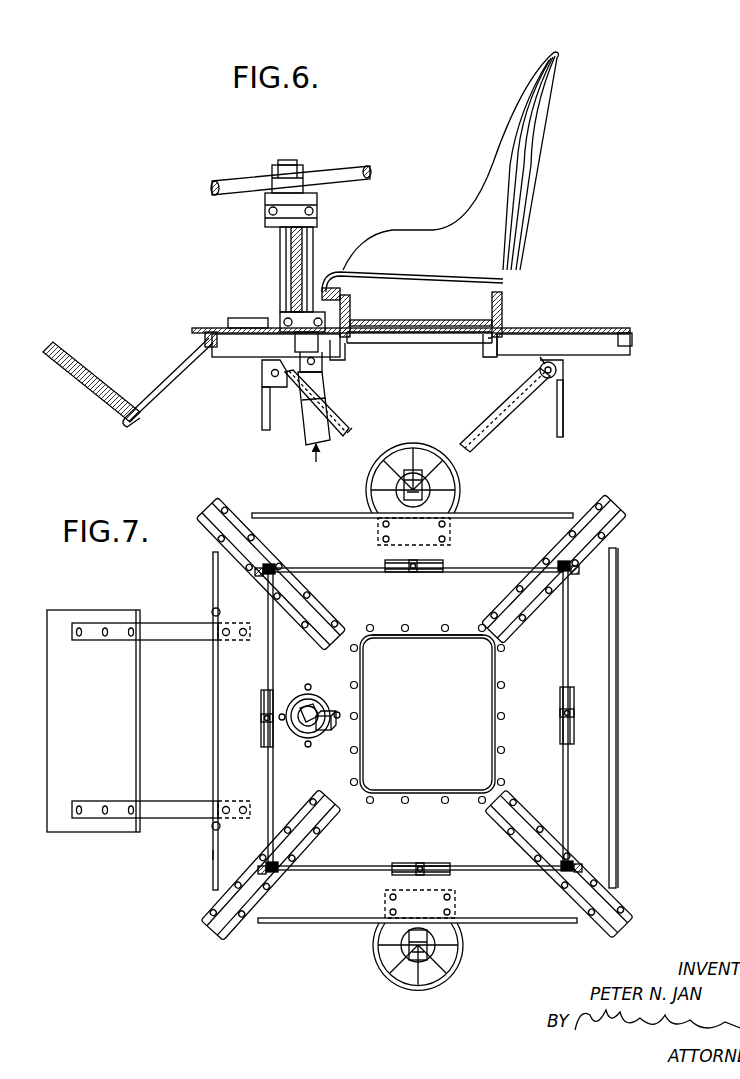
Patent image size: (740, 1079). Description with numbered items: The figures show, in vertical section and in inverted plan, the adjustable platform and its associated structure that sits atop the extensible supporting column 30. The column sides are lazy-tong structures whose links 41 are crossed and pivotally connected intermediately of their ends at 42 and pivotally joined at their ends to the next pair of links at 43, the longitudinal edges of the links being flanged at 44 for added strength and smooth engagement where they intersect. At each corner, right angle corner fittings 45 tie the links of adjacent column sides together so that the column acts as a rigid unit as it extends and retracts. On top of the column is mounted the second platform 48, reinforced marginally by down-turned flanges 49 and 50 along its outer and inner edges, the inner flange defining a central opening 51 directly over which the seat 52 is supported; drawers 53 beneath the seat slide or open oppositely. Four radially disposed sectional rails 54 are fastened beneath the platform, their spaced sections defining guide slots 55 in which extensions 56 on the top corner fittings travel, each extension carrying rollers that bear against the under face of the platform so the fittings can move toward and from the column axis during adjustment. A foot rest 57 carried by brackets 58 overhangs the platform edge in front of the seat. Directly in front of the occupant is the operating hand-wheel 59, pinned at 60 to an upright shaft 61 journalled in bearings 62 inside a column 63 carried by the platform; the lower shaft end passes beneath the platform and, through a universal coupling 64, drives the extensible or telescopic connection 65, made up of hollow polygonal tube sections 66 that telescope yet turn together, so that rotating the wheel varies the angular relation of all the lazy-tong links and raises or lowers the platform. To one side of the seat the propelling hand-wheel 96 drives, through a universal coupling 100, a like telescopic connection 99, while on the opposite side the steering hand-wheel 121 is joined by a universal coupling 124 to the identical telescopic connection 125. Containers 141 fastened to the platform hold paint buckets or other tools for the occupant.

In FIG. 6, the supporting column 30 is at (566, 416).
In FIG. 7, the supporting column 30 is at (569, 636).
In FIG. 6, the links 41 is at (270, 429).
In FIG. 7, the links 41 is at (397, 573).
In FIG. 7, the pivotal connection 42 is at (413, 573).
In FIG. 6, the pivotal connection 43 is at (263, 412).
In FIG. 7, the pivotal connection 43 is at (266, 863).
In FIG. 6, the flanges 44 is at (349, 432).
In FIG. 7, the flanges 44 is at (575, 784).
In FIG. 6, the right angle corner fittings 45 is at (263, 367).
In FIG. 7, the right angle corner fittings 45 is at (567, 567).
In FIG. 6, the second platform 48 is at (574, 328).
In FIG. 7, the second platform 48 is at (606, 745).
In FIG. 6, the down-turned flange 49 is at (629, 342).
In FIG. 7, the down-turned flange 49 is at (619, 681).
In FIG. 6, the down-turned flange 50 is at (357, 344).
In FIG. 7, the down-turned flange 50 is at (423, 640).
In FIG. 6, the central opening 51 is at (422, 340).
In FIG. 7, the central opening 51 is at (428, 714).
In FIG. 6, the seat 52 is at (538, 186).
In FIG. 6, the drawers 53 is at (504, 306).
In FIG. 6, the rails 54 is at (226, 352).
In FIG. 7, the rails 54 is at (232, 566).
In FIG. 6, the guide slots 55 is at (338, 356).
In FIG. 7, the guide slots 55 is at (221, 535).
In FIG. 6, the extensions 56 is at (543, 362).
In FIG. 7, the extensions 56 is at (557, 567).
In FIG. 6, the foot rest 57 is at (97, 379).
In FIG. 7, the foot rest 57 is at (93, 721).
In FIG. 6, the brackets 58 is at (163, 400).
In FIG. 7, the brackets 58 is at (165, 640).
In FIG. 6, the operating hand-wheel 59 is at (370, 170).
In FIG. 6, the pin 60 is at (300, 177).
In FIG. 6, the upright shaft 61 is at (280, 241).
In FIG. 6, the bearings 62 is at (320, 207).
In FIG. 7, the bearings 62 is at (297, 697).
In FIG. 6, the column 63 is at (308, 238).
In FIG. 6, the universal coupling 64 is at (318, 375).
In FIG. 7, the universal coupling 64 is at (300, 742).
In FIG. 6, the extensible or telescopic connection 65 is at (321, 465).
In FIG. 6, the hollow polygonal tube sections 66 is at (311, 433).
In FIG. 7, the hollow polygonal tube sections 66 is at (331, 734).
In FIG. 7, the operating hand-wheel 96 is at (461, 488).
In FIG. 7, the extensible or telescopic connection 99 is at (396, 488).
In FIG. 7, the universal coupling 100 is at (455, 509).
In FIG. 7, the hand-wheel 121 is at (466, 952).
In FIG. 7, the universal coupling 124 is at (405, 933).
In FIG. 7, the extensible or telescopic connection 125 is at (412, 962).
In FIG. 6, the containers 141 is at (257, 322).